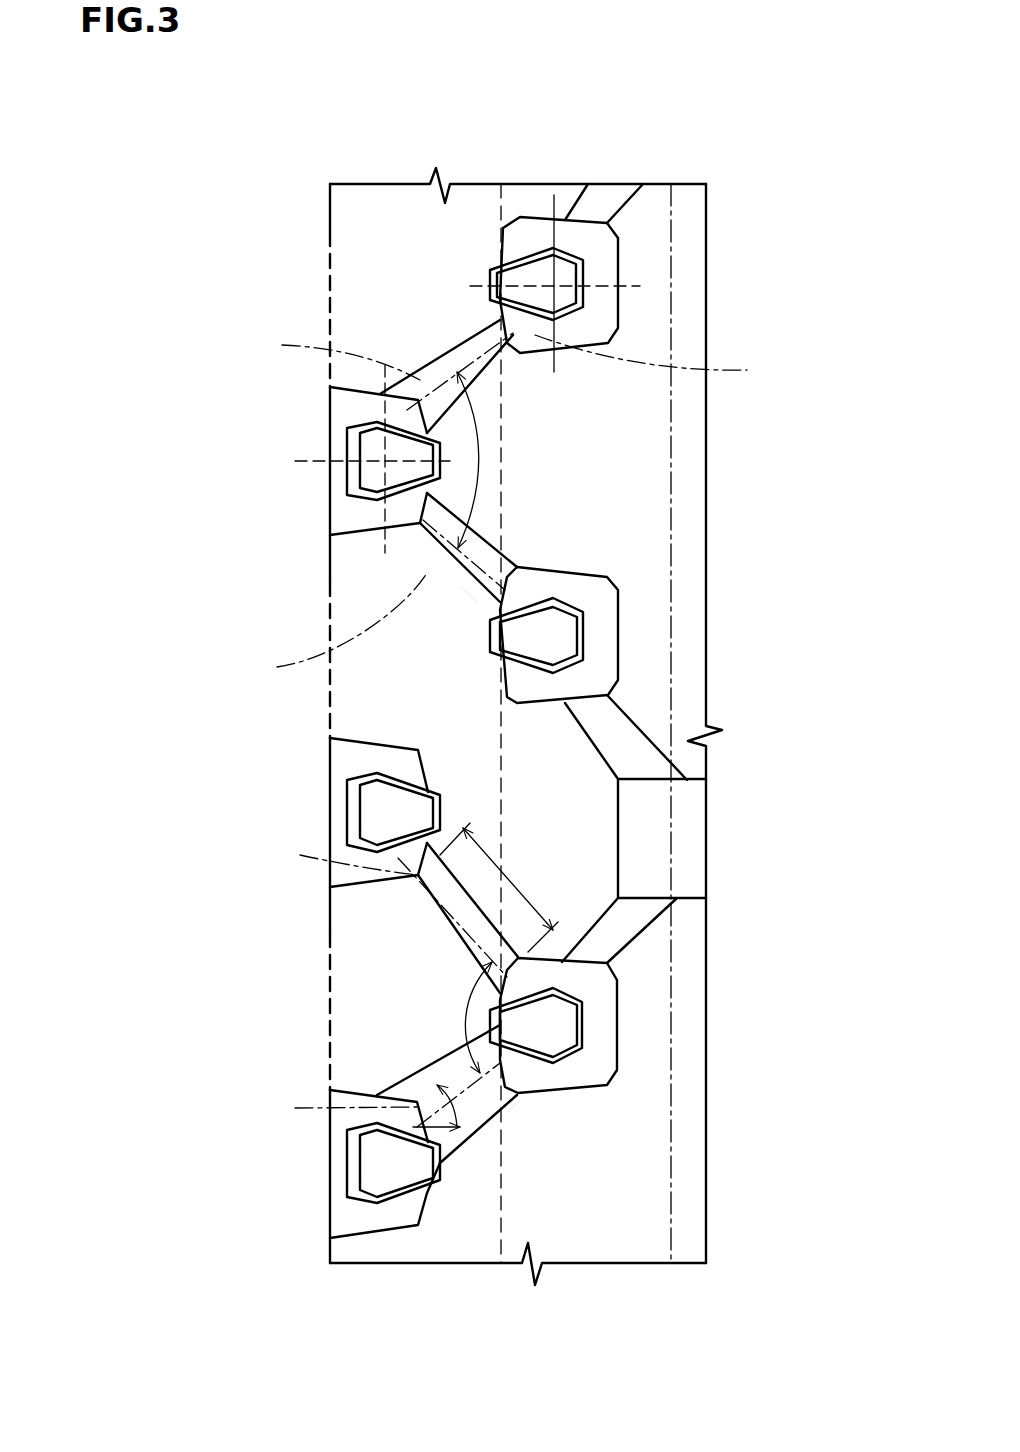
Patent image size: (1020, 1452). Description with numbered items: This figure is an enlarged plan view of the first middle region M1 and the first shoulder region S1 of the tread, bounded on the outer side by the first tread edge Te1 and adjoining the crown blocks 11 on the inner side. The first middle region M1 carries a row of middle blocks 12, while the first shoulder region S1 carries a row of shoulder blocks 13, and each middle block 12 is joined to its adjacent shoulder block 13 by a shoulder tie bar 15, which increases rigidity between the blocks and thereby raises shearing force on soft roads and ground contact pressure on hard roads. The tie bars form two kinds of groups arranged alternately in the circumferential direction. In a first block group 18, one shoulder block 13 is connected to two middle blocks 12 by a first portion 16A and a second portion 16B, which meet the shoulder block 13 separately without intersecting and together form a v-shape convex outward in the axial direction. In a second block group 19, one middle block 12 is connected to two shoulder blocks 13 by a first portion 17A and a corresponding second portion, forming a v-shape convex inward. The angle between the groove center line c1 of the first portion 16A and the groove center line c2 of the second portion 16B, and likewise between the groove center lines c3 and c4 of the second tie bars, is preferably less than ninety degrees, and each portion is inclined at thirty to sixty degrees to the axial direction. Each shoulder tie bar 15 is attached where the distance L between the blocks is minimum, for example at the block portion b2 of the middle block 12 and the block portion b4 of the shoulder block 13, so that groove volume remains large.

The crown block 11 is at (687, 828).
The middle block 12 is at (602, 260).
The shoulder block 13 is at (355, 406).
The shoulder tie bar 15 is at (508, 1112).
The first portion 16A is at (450, 337).
The second portion 16B is at (460, 587).
The first portion 17A is at (438, 918).
The first block group 18 is at (375, 292).
The second block group 19 is at (378, 1005).
The groove center line c1 is at (330, 356).
The groove center line c2 is at (333, 627).
The groove center line c3 is at (300, 855).
The groove center line c4 is at (295, 1109).
The block portion b2 is at (662, 362).
The block portion b4 is at (340, 461).
The distance L is at (545, 893).
The first tread edge Te1 is at (330, 1220).
The first shoulder region S1 is at (420, 1273).
The first middle region M1 is at (592, 1273).